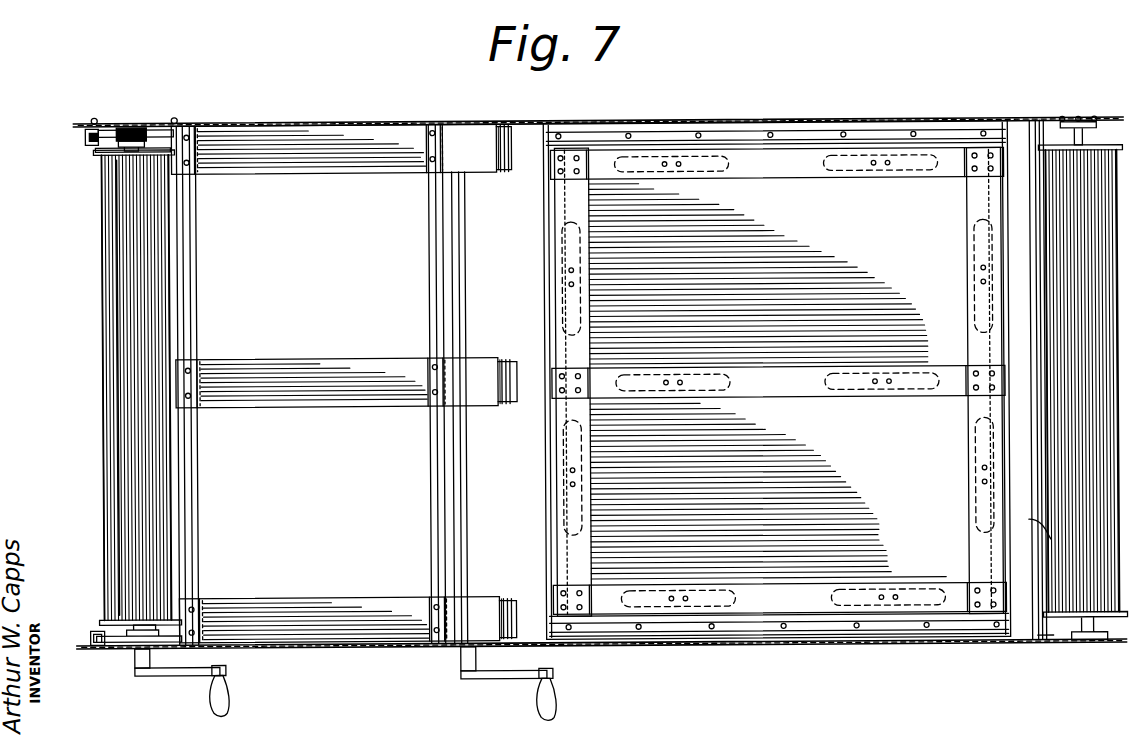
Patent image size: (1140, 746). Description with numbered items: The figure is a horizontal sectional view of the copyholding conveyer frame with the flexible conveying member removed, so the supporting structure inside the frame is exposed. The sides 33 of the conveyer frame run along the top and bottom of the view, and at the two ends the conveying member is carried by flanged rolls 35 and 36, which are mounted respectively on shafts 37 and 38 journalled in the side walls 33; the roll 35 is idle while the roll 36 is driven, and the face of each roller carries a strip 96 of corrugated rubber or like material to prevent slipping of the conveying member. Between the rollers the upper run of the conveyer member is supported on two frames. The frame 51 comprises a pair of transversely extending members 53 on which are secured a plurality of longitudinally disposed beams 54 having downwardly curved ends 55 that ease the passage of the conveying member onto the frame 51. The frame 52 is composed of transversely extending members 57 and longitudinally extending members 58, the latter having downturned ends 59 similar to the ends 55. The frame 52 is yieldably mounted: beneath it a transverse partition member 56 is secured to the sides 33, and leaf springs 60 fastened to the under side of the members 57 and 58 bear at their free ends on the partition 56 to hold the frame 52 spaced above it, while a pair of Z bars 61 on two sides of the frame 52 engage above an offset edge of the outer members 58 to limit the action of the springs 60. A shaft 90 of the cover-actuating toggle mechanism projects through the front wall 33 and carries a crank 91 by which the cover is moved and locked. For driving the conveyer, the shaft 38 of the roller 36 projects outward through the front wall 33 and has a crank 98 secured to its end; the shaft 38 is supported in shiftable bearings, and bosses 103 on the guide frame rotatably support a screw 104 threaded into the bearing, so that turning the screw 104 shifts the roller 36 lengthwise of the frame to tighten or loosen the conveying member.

The sides of the conveyer frame 33 is at (326, 119).
The flanged roll 35 is at (1072, 640).
The flanged roll 36 is at (106, 331).
The shaft 37 is at (1112, 644).
The shaft 38 is at (150, 128).
The frame 51 is at (370, 171).
The frame 52 is at (814, 179).
The transversely extending members 53 is at (196, 300).
The longitudinally disposed beams 54 is at (356, 405).
The downwardly curved ends 55 is at (512, 173).
The partition member 56 is at (768, 380).
The transversely extending members 57 is at (562, 213).
The longitudinally extending members 58 is at (921, 179).
The downturned ends 59 is at (1010, 350).
The leaf springs 60 is at (732, 167).
The Z bars 61 is at (938, 132).
The shaft 90 is at (468, 520).
The crank 91 is at (504, 678).
The strip of corrugated rubber 96 is at (118, 265).
The crank 98 is at (182, 673).
The bosses 103 is at (97, 147).
The screw 104 is at (87, 132).